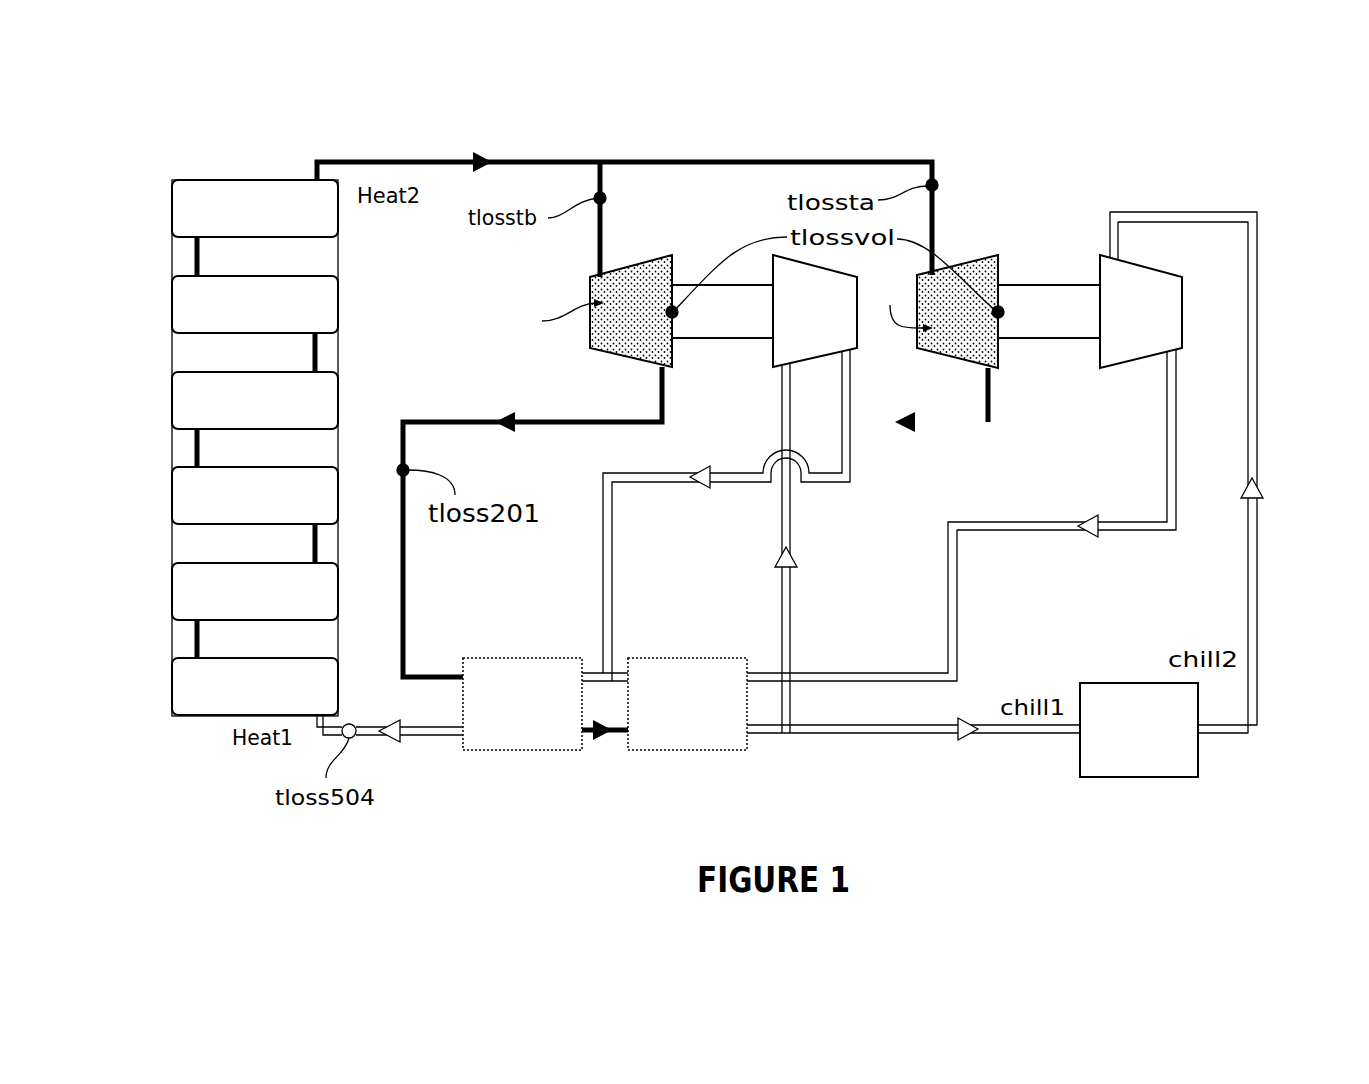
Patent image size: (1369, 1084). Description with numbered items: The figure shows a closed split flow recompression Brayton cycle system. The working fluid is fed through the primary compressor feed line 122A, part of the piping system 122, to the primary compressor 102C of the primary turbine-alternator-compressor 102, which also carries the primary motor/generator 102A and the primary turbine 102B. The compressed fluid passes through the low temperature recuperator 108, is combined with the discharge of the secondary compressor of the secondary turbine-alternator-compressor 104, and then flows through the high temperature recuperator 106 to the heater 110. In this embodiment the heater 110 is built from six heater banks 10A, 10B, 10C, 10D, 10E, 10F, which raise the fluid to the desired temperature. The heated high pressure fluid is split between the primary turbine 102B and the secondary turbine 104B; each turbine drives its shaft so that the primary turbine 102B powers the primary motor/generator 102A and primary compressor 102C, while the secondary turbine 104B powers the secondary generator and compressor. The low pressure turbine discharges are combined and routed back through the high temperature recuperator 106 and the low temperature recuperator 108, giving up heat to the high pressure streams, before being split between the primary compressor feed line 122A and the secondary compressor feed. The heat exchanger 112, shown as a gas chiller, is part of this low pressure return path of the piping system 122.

The heater 110 is at (196, 446).
The heater bank 10A is at (172, 711).
The heater bank 10B is at (172, 615).
The heater bank 10C is at (172, 520).
The heater bank 10D is at (172, 425).
The heater bank 10E is at (172, 329).
The heater bank 10F is at (172, 232).
The secondary turbine-alternator-compressor 104 is at (717, 262).
The secondary turbine 104B is at (613, 272).
The primary turbine-alternator-compressor 102 is at (1111, 262).
The primary motor/generator 102A is at (1060, 284).
The primary turbine 102B is at (1002, 272).
The primary compressor 102C is at (1183, 325).
The piping system 122 is at (1217, 204).
The primary compressor feed line 122A is at (1256, 358).
The high temperature recuperator 106 is at (500, 752).
The low temperature recuperator 108 is at (750, 742).
The heat exchanger 112 is at (1200, 760).